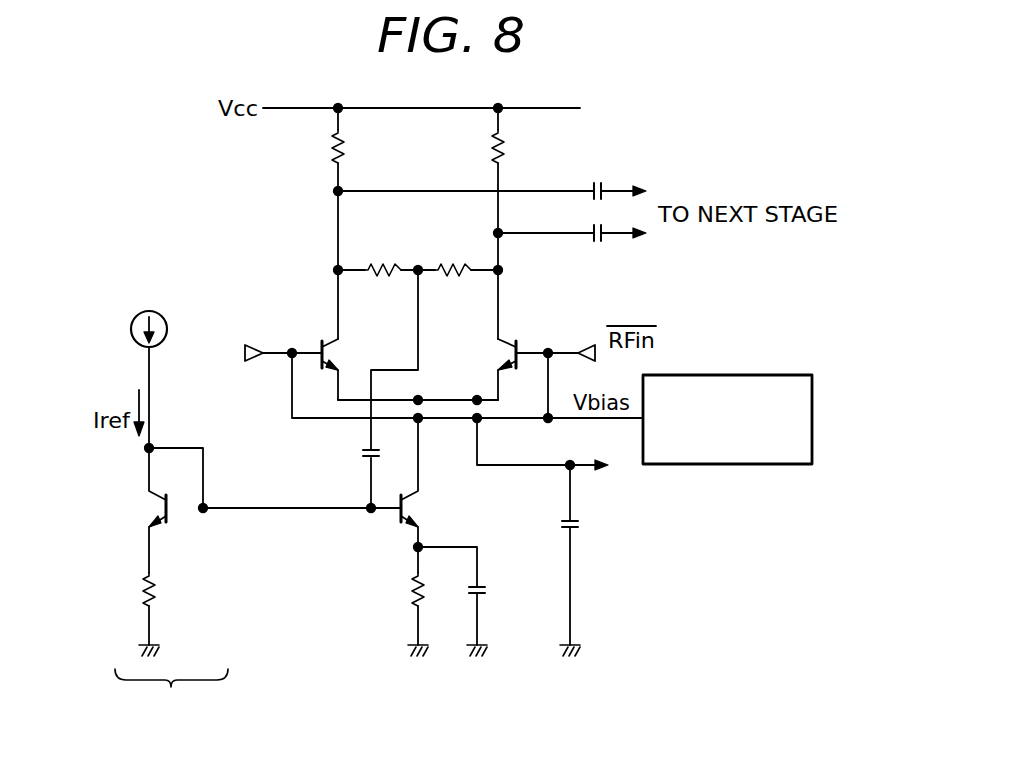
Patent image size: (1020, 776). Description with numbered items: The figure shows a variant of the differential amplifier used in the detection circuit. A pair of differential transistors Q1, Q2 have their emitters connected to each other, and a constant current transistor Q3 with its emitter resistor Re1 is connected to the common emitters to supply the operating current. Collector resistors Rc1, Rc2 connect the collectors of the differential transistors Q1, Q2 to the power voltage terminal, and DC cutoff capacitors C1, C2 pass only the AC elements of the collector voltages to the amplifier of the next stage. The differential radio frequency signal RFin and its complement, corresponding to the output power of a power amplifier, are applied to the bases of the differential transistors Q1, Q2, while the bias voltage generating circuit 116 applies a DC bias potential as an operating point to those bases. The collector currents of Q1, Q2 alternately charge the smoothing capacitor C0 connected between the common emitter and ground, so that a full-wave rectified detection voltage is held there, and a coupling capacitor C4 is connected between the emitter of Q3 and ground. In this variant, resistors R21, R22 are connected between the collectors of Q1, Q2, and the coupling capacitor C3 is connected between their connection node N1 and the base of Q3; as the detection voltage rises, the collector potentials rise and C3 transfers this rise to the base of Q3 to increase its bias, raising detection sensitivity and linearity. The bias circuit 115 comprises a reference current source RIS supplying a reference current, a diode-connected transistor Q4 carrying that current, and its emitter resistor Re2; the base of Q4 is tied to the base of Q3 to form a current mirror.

The bias circuit 115 is at (171, 690).
The bias voltage generating circuit 116 is at (769, 466).
The reference current source RIS is at (131, 322).
The differential transistor Q1 is at (330, 369).
The differential transistor Q2 is at (505, 369).
The constant current transistor Q3 is at (327, 482).
The transistor Q4 is at (140, 510).
The collector resistor Rc1 is at (315, 149).
The collector resistor Rc2 is at (522, 170).
The resistor R21 is at (378, 285).
The resistor R22 is at (458, 285).
The emitter resistor Re1 is at (398, 601).
The emitter resistor Re2 is at (128, 614).
The smoothing capacitor C0 is at (588, 560).
The DC cutoff capacitor C1 is at (492, 182).
The DC cutoff capacitor C2 is at (572, 224).
The coupling capacitor C3 is at (353, 476).
The coupling capacitor C4 is at (470, 601).
The connection node N1 is at (418, 265).
The radio frequency signal RFin is at (242, 353).